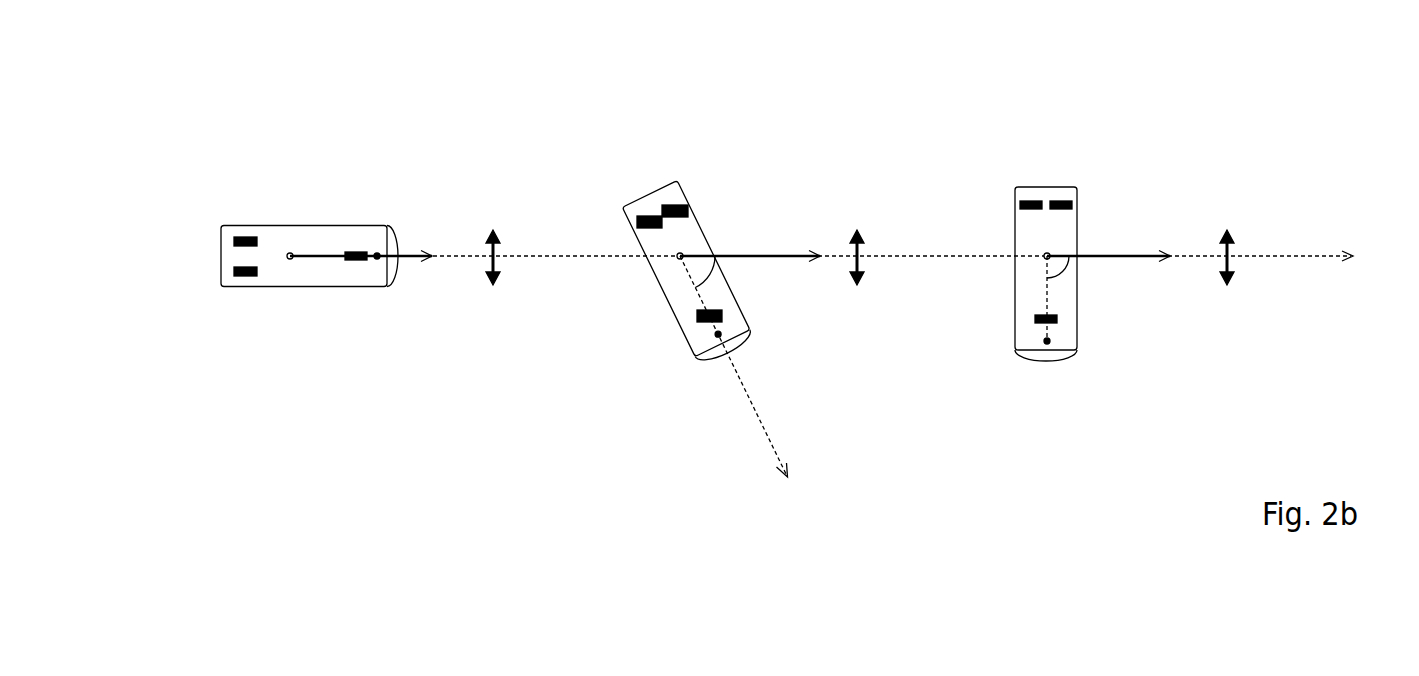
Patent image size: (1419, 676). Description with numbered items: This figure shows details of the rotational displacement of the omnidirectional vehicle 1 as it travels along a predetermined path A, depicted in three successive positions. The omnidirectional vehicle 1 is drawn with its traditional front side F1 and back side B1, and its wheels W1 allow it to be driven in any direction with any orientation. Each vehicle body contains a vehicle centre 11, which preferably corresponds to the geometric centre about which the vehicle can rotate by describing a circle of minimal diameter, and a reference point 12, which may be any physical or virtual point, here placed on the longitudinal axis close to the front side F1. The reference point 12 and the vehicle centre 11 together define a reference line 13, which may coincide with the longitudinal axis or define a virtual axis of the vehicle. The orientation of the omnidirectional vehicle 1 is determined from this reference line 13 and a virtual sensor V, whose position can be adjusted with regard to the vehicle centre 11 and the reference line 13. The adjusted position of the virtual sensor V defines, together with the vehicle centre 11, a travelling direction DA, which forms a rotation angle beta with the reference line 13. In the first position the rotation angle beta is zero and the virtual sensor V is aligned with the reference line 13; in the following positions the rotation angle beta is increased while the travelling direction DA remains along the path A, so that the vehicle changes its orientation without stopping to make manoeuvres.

The omnidirectional vehicle 1 is at (322, 175).
The vehicle centre 11 is at (290, 262).
The reference point 12 is at (382, 253).
The reference line 13 is at (702, 295).
The back side B1 is at (221, 250).
The front side F1 is at (394, 243).
The sensor / contact pads W1 is at (244, 236).
The travelling direction DA is at (412, 258).
The virtual sensor V is at (498, 250).
The path A is at (907, 259).
The rotation angle beta is at (883, 282).